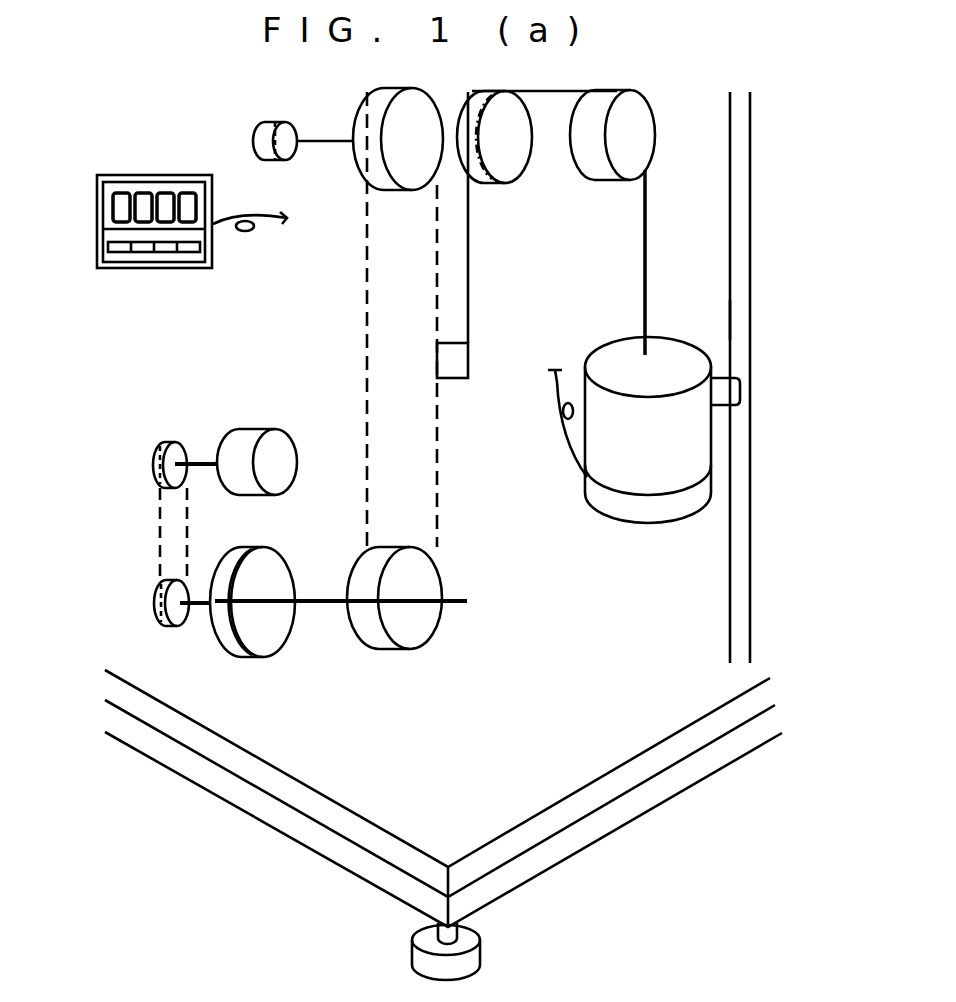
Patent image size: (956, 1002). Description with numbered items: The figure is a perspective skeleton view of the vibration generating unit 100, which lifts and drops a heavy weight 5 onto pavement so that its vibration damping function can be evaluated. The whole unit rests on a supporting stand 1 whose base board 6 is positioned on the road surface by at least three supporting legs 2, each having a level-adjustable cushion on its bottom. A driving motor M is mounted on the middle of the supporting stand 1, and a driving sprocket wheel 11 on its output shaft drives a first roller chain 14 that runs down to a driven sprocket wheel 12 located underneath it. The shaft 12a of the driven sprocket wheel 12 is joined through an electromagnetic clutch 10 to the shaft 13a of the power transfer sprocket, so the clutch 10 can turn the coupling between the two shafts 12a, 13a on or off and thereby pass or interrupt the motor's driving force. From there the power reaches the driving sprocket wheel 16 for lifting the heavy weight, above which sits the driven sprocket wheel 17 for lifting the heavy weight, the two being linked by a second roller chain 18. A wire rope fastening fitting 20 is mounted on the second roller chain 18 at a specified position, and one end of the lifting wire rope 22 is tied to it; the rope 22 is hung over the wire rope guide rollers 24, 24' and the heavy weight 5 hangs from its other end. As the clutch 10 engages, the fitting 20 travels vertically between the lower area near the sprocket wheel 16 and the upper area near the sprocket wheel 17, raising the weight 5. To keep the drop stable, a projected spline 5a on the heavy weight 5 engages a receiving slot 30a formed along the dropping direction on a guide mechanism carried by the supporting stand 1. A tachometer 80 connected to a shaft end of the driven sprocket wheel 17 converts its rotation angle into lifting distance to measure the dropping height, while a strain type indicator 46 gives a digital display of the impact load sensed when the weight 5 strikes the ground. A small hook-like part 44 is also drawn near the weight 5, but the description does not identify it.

The vibration generating unit 100 is at (328, 111).
The tachometer 80 is at (253, 140).
The strain type indicator 46 is at (148, 268).
The driven sprocket wheel for lifting the heavy weight 17 is at (410, 170).
The second roller chain 18 is at (367, 308).
The wire rope guide roller 24 is at (502, 179).
The wire rope guide roller 24' is at (612, 177).
The lifting wire rope 22 is at (468, 283).
The wire rope fastening fitting 20 is at (470, 356).
The supporting stand 1 is at (750, 257).
The receiving slot 30a is at (743, 333).
The heavy weight 5 is at (677, 340).
The projected spline 5a is at (740, 392).
The hook 44 is at (545, 390).
The driving motor M is at (250, 430).
The driving sprocket wheel 11 is at (152, 460).
The first roller chain 14 is at (160, 537).
The driven sprocket wheel 12 is at (152, 609).
The shaft of the driven sprocket wheel 12a is at (202, 606).
The electromagnetic clutch 10 is at (252, 632).
The shaft of the power transfer sprocket wheel 13a is at (323, 605).
The driving sprocket wheel for lifting the heavy weight 16 is at (420, 623).
The base board 6 is at (257, 773).
The supporting leg 2 is at (452, 936).